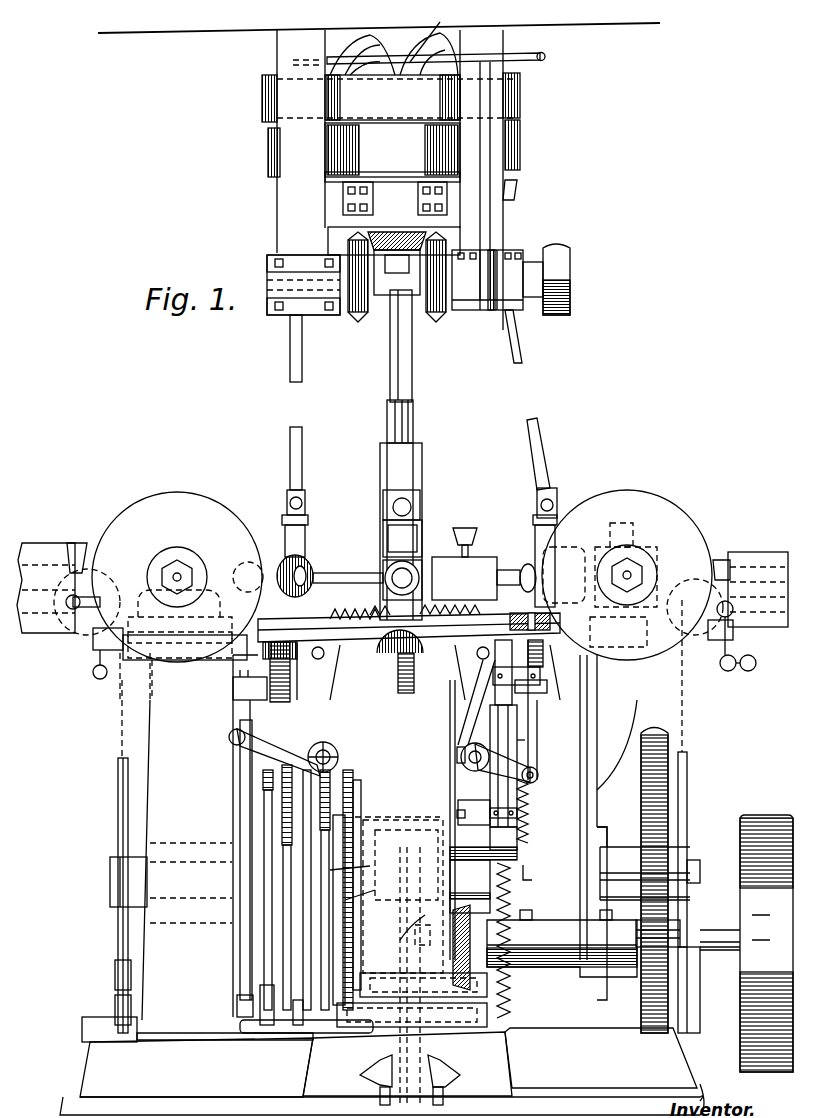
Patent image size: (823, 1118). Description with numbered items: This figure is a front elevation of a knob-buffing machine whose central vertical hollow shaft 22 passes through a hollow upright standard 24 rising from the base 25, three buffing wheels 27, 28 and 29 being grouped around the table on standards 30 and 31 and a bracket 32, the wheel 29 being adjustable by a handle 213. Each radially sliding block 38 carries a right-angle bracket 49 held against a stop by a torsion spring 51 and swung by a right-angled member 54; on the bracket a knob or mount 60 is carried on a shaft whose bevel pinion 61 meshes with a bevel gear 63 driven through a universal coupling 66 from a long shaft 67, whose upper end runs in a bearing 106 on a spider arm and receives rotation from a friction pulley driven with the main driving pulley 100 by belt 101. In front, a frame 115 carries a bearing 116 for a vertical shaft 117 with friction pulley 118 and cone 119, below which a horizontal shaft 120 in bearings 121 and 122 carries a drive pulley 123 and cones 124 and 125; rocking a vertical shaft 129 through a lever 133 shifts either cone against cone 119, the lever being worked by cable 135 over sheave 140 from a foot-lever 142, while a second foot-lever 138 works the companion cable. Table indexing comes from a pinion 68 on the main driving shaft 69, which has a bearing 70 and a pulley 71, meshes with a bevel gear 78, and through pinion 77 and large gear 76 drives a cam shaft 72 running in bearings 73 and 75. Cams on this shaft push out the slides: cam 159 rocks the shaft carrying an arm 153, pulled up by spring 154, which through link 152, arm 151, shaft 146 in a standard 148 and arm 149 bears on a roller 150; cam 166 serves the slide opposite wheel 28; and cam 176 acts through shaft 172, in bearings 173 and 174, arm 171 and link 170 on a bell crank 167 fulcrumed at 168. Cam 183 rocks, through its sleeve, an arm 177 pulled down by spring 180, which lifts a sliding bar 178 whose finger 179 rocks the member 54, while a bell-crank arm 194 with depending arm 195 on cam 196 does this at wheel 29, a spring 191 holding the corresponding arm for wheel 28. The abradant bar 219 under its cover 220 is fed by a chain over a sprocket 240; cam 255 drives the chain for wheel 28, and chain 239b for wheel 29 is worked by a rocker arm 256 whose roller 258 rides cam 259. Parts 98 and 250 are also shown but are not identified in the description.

The cable 135 is at (438, 33).
The horizontal guiding sheave 140 is at (305, 58).
The slides or blocks 38 is at (394, 54).
The lever 133 is at (535, 55).
The main horizontal driving pulley 100 is at (262, 80).
The belt 101 is at (522, 97).
The vertical shaft 129 is at (492, 145).
The frame 115 is at (520, 162).
The friction drive pulley 118 is at (364, 152).
The vertical bearing 106 is at (520, 198).
The vertical bearing 116 is at (380, 200).
The vertical shaft 117 is at (462, 195).
The friction cone 119 is at (345, 240).
The slidable bearing 122 is at (505, 275).
The drive pulley 123 is at (565, 268).
The bearing 121 is at (280, 292).
The friction cone 124 is at (345, 322).
The friction cone 125 is at (436, 325).
The horizontal shaft 120 is at (380, 300).
The long small shaft 67 is at (415, 375).
The central vertical hollow shaft 22 is at (415, 412).
The universal coupling 66 is at (307, 507).
The right-angle bracket 49 is at (283, 548).
The bevel gear 63 is at (315, 568).
The beveled pinion 61 is at (347, 586).
The knob or mount 60 is at (255, 568).
The buffing wheel 28 is at (420, 530).
The buffing wheel 29 is at (212, 489).
The buffing wheel 27 is at (660, 497).
The cover 220 is at (55, 545).
The block or bar of abrading or polishing material 219 is at (80, 545).
The sprocket wheel 240 is at (70, 620).
The turning handle 213 is at (93, 672).
The roller 150 is at (295, 619).
The right-angled member 54 is at (510, 605).
The transverse finger or bar 179 is at (540, 680).
The torsion spring 51 is at (415, 693).
The bracket 32 is at (635, 695).
The arm 194 is at (233, 688).
The post or standard 30 is at (240, 762).
The actuating chain 239b is at (120, 722).
The cam 259 is at (117, 783).
The cam shaft 72 is at (110, 880).
The rocker arm 256 is at (115, 978).
The roller 258 is at (115, 1003).
The bell crank 167 is at (312, 718).
The fulcrum 168 is at (308, 750).
The depending arm 195 is at (240, 768).
The cam 196 is at (262, 808).
The spring 191 is at (260, 822).
The bearing 75 is at (238, 890).
The link 170 is at (280, 855).
The cam 176 is at (300, 895).
The cam 159 is at (272, 885).
The shaft 146 is at (528, 748).
The arm 151 is at (548, 768).
The arm 149 is at (520, 703).
The vertically-sliding bar 178 is at (510, 728).
The post or standard 31 is at (543, 732).
The standard 148 is at (470, 802).
The link 152 is at (530, 810).
The spring 154 is at (525, 832).
The arm 177 is at (542, 850).
The arm 153 is at (549, 874).
The pinion 68 is at (475, 885).
The coil spring 180 is at (515, 905).
The bearing 70 is at (562, 943).
The horizontal bevel gear 78 is at (427, 947).
The large gear 76 is at (668, 740).
The rod 250 is at (688, 780).
The bearing 73 is at (622, 838).
The driving pulley 71 is at (765, 806).
The pinion 77 is at (680, 915).
The main driving shaft 69 is at (705, 958).
The hollow upright standard or post 24 is at (403, 943).
The cam 255 is at (380, 812).
The cam 166 is at (372, 880).
The controlling cam 183 is at (380, 907).
The lever 98 is at (405, 932).
The bearing 173 is at (273, 1002).
The bearing 174 is at (314, 1007).
The shaft 172 is at (240, 1012).
The arm 171 is at (250, 1030).
The foot-lever 142 is at (365, 1072).
The foot-lever 138 is at (448, 1070).
The base 25 is at (382, 1071).